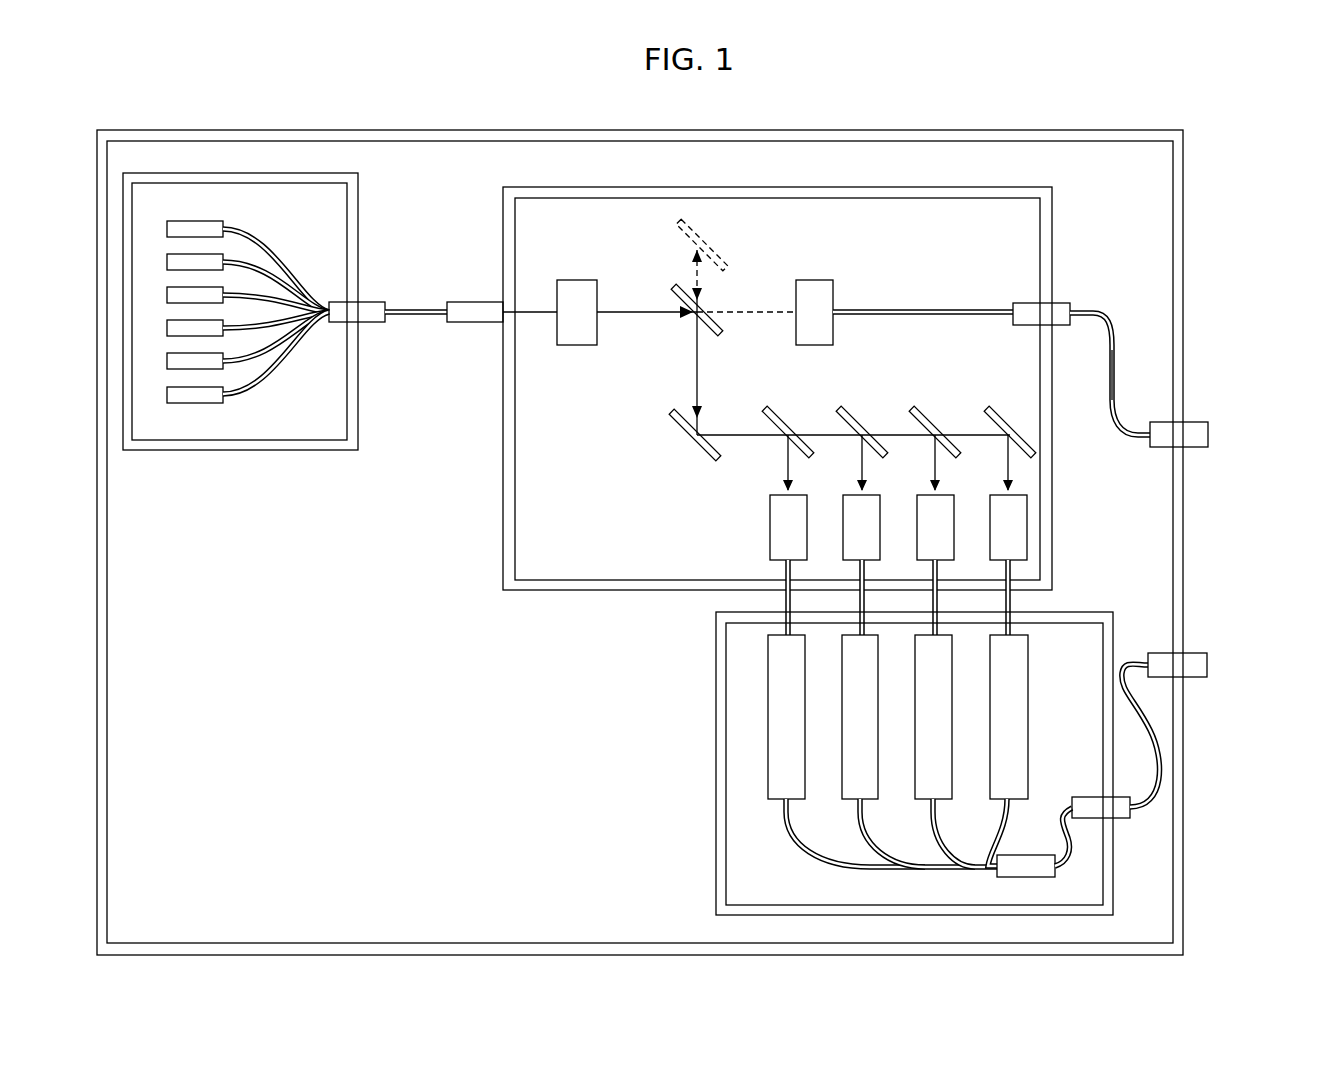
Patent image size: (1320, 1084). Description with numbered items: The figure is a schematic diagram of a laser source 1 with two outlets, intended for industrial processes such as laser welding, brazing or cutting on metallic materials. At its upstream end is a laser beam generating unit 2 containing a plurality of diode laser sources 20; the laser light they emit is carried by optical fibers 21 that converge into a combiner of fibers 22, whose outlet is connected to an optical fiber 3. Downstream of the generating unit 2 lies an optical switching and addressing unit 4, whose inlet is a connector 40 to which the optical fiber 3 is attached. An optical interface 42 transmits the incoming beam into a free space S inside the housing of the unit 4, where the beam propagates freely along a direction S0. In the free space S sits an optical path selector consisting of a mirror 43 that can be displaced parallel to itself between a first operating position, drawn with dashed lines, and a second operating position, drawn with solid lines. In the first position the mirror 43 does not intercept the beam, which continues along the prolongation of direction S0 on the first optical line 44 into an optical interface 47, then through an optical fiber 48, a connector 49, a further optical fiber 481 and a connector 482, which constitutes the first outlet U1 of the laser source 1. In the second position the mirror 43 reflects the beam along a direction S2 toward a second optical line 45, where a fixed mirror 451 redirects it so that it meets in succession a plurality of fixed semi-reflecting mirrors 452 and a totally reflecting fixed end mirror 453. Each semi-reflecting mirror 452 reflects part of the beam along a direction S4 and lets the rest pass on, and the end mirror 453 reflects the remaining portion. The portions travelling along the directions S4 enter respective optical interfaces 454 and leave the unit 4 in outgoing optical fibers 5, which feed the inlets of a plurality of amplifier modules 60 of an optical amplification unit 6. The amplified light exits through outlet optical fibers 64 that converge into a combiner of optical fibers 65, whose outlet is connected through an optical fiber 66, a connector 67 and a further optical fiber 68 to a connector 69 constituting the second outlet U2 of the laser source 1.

The laser source 1 is at (1226, 176).
The laser beam generating unit 2 is at (285, 452).
The diode laser sources 20 is at (167, 262).
The optical fibers 21 is at (250, 286).
The combiner of fibers 22 is at (360, 304).
The optical fiber 3 is at (425, 324).
The connector 40 is at (478, 301).
The optical switching and addressing unit 4 is at (500, 548).
The optical interface 42 is at (578, 346).
The mirror 43 is at (726, 242).
The first optical line 44 is at (926, 305).
The second optical line 45 is at (722, 494).
The fixed mirror 451 is at (700, 456).
The fixed semi-reflecting mirrors 452 is at (790, 416).
The totally reflecting fixed end mirror 453 is at (1003, 419).
The optical interfaces 454 is at (848, 525).
The optical interface 47 is at (820, 284).
The optical fiber 48 is at (984, 306).
The connector 49 is at (1058, 299).
The further optical fiber 481 is at (1115, 351).
The connector 482 is at (1200, 449).
The outgoing optical fibers 5 is at (785, 598).
The optical amplification unit 6 is at (716, 794).
The amplifier modules 60 is at (800, 690).
The outlet optical fibers 64 is at (865, 837).
The combiner of optical fibers 65 is at (1024, 879).
The optical fiber 66 is at (1055, 812).
The connector 67 is at (1120, 820).
The further optical fiber 68 is at (1155, 736).
The connector 69 is at (1205, 679).
The free space S is at (632, 236).
The direction S0 is at (656, 318).
The direction S2 is at (694, 383).
The direction S4 is at (930, 457).
The first outlet U1 is at (1220, 435).
The second outlet U2 is at (1227, 650).